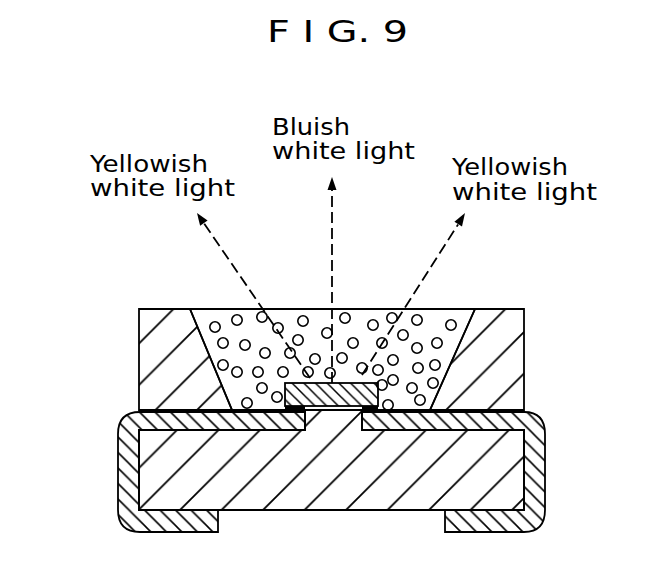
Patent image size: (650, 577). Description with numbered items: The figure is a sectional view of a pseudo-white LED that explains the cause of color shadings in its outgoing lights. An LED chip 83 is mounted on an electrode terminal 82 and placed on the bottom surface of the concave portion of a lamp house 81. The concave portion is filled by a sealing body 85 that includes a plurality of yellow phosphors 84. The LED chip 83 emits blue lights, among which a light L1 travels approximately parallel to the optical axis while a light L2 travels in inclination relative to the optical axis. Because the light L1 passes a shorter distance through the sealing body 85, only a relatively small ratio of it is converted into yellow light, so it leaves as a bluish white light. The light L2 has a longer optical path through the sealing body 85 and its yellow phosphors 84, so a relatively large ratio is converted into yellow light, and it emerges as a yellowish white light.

The lamp house 81 is at (505, 331).
The electrode terminal 82 is at (130, 492).
The LED chip 83 is at (325, 407).
The yellow phosphors 84 is at (214, 309).
The sealing body 85 is at (440, 316).
The light travelling approximately parallel to the optical axis L1 is at (332, 210).
The light travelling in inclination relative to the optical axis L2 is at (209, 232).